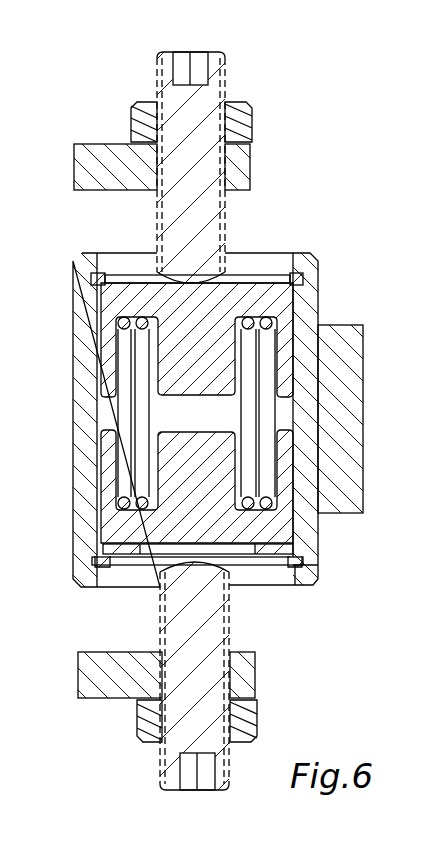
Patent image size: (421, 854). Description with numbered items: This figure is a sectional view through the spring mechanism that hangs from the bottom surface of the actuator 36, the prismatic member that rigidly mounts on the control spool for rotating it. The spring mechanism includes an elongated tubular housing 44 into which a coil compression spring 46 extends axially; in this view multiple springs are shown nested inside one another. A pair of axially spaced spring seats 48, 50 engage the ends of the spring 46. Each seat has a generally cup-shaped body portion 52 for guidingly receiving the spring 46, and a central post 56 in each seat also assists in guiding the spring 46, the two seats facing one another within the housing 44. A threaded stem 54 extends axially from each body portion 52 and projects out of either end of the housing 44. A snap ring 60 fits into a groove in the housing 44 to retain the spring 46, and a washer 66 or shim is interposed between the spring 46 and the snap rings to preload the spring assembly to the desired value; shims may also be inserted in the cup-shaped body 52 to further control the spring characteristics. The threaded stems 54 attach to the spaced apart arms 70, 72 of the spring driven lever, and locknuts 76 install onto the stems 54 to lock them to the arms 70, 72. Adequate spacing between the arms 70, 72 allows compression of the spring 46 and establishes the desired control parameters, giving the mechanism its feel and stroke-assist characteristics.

The actuator 36 is at (353, 377).
The elongated tubular housing 44 is at (80, 255).
The coil compression spring 46 is at (265, 415).
The spring seat 48 is at (278, 300).
The spring seat 50 is at (273, 528).
The cup-shaped body portion 52 is at (210, 427).
The threaded stem 54 is at (227, 56).
The central post 56 is at (207, 432).
The snap ring 60 is at (291, 567).
The washer 66 is at (238, 558).
The arm 70 is at (116, 148).
The arm 72 is at (121, 690).
The locknut 76 is at (248, 118).